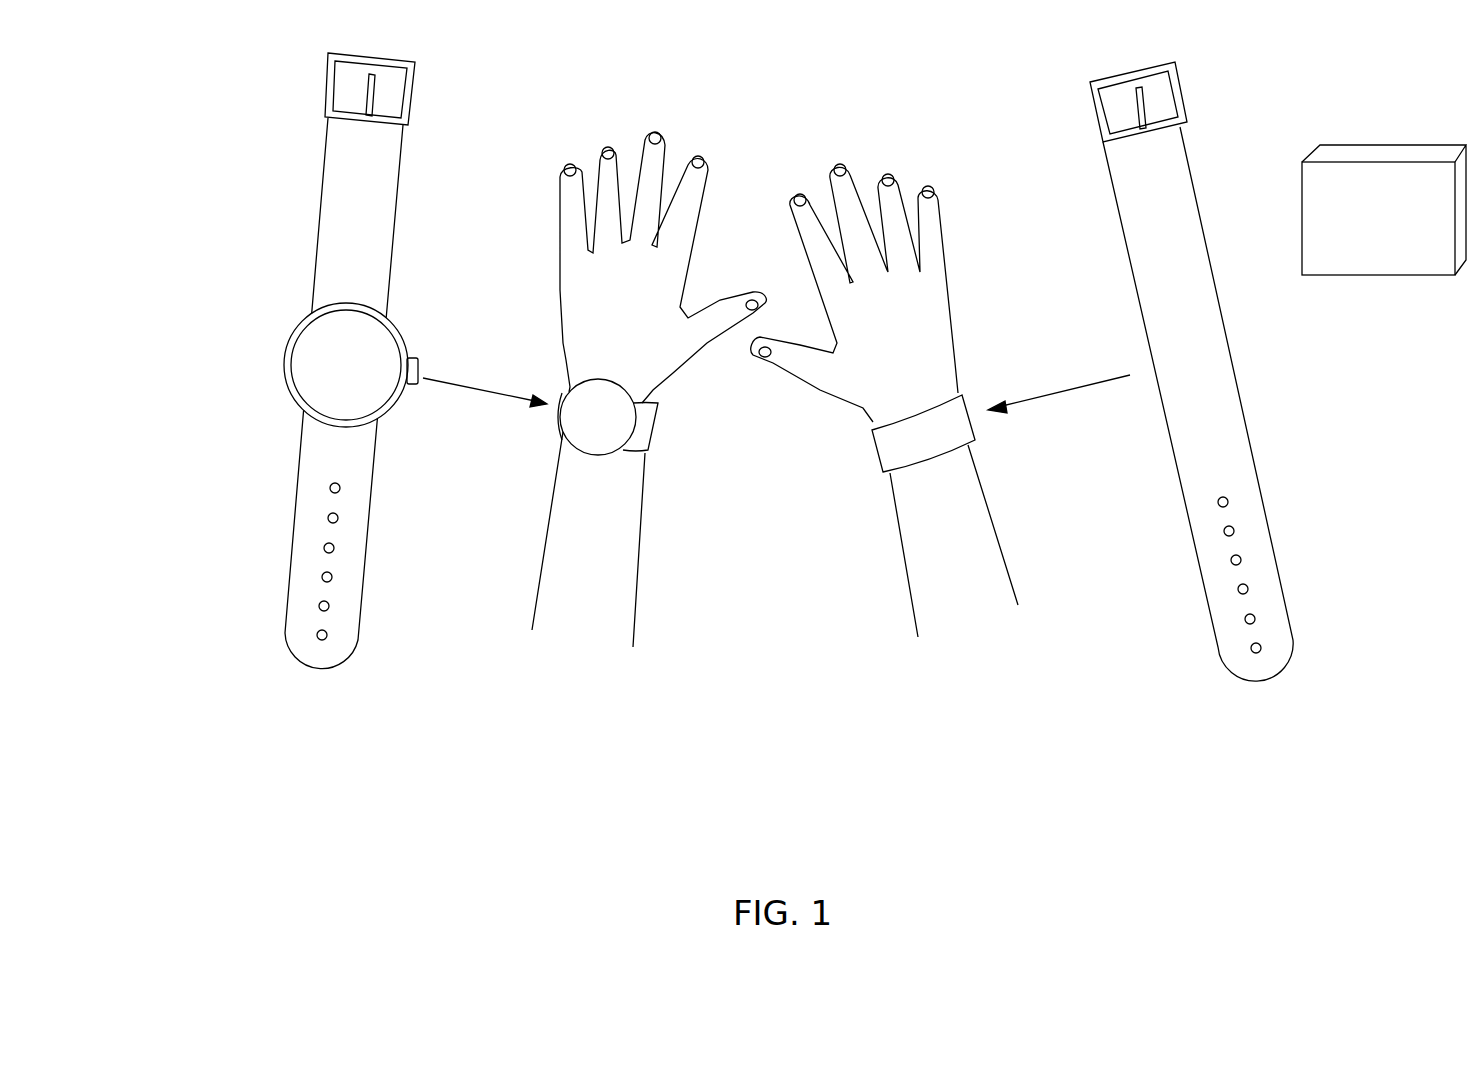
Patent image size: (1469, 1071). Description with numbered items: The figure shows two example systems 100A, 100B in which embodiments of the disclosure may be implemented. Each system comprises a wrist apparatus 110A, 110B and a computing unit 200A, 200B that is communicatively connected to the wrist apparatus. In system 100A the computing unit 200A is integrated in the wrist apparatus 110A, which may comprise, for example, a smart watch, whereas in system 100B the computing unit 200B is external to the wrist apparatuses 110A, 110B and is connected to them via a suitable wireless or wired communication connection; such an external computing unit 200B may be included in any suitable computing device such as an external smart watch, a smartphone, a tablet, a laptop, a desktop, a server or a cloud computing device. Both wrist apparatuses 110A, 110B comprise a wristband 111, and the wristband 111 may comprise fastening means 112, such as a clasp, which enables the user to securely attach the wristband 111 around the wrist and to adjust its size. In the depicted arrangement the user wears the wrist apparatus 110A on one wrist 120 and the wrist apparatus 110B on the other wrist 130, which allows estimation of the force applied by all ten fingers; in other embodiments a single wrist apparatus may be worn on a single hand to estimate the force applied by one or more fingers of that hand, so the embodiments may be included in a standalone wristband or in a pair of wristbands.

The system 100A is at (196, 718).
The system 100B is at (1162, 730).
The wrist apparatus 110A is at (198, 236).
The wrist apparatus 110B is at (1274, 367).
The wristband 111 is at (322, 202).
The fastening means 112 is at (328, 83).
The wrist 120 is at (645, 460).
The wrist 130 is at (972, 447).
The computing unit 200A is at (286, 348).
The computing unit 200B is at (1370, 143).